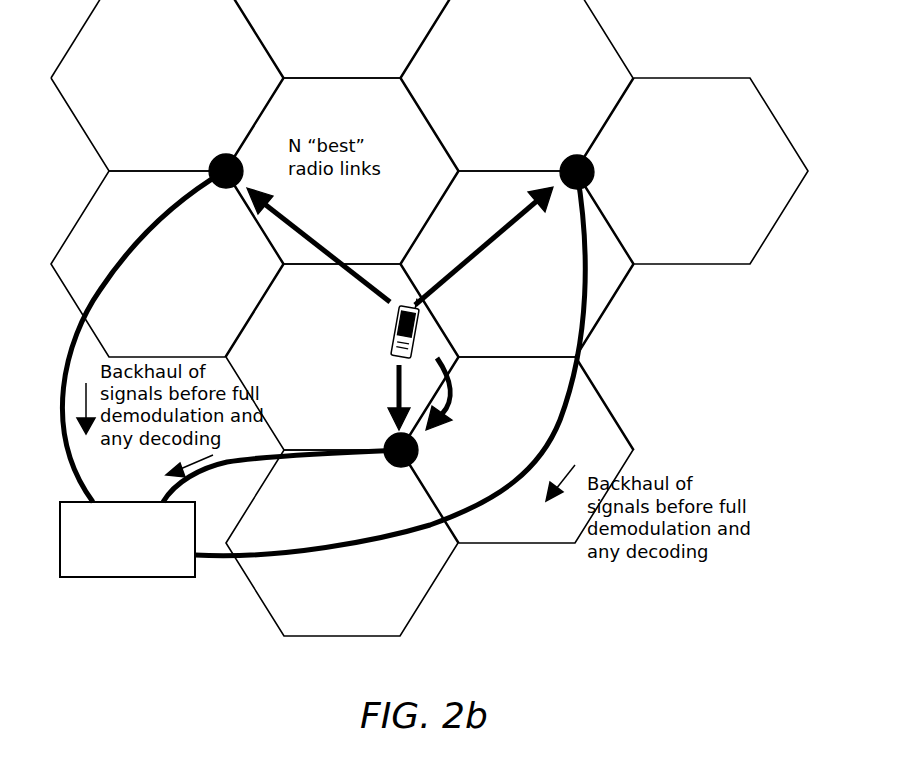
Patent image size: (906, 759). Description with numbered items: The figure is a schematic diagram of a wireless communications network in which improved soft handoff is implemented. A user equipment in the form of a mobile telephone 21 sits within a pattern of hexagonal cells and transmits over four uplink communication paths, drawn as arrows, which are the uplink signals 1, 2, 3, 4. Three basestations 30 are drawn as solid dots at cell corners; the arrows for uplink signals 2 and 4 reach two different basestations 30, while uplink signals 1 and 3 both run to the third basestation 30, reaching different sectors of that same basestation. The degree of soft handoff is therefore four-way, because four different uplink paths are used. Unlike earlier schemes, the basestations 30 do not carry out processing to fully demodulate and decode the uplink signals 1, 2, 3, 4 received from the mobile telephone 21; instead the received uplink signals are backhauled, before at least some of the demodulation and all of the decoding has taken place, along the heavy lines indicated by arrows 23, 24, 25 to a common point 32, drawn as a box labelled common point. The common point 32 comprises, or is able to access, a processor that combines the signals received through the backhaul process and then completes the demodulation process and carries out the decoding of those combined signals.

The basestation 30 is at (213, 153).
The mobile telephone 21 is at (390, 330).
The backhaul arrow 23 is at (140, 242).
The backhaul arrow 24 is at (567, 430).
The backhaul arrow 25 is at (297, 462).
The common point 32 is at (108, 578).
The uplink signal 1 is at (395, 397).
The uplink signal 2 is at (318, 245).
The uplink signal 3 is at (446, 394).
The uplink signal 4 is at (484, 246).